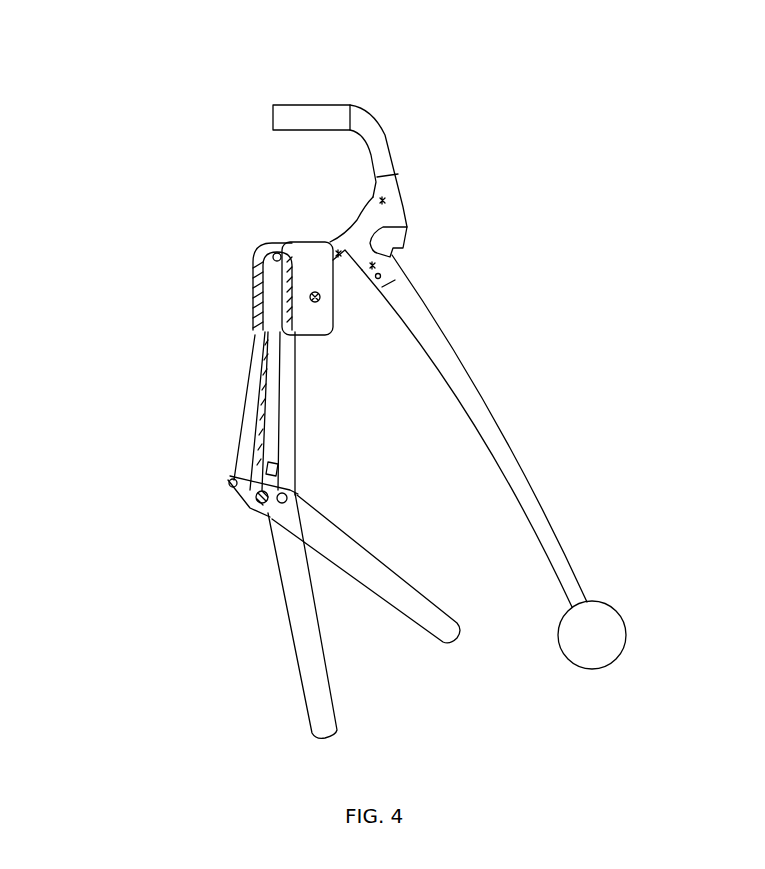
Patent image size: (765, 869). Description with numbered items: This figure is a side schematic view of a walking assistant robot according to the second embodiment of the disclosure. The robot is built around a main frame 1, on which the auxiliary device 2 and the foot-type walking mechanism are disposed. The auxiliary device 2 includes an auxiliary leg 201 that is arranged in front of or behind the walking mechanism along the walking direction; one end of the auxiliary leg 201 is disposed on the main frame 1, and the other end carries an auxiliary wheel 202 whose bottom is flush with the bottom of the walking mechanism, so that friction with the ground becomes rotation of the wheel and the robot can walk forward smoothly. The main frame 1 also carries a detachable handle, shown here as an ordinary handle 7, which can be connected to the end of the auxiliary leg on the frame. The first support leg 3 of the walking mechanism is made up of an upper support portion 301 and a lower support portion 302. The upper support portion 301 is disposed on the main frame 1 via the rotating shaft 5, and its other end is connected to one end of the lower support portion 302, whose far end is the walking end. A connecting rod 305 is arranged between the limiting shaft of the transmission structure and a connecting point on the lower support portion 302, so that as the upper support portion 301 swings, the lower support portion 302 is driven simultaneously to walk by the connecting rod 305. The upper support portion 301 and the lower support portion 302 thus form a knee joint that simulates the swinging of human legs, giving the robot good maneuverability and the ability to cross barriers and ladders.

The main frame 1 is at (308, 262).
The auxiliary device 2 is at (602, 397).
The first support leg 3 is at (158, 565).
The rotating shaft 5 is at (295, 337).
The ordinary handle 7 is at (378, 142).
The auxiliary leg 201 is at (443, 363).
The auxiliary wheel 202 is at (595, 633).
The upper support portion 301 is at (230, 470).
The lower support portion 302 is at (307, 625).
The connecting rod 305 is at (268, 388).